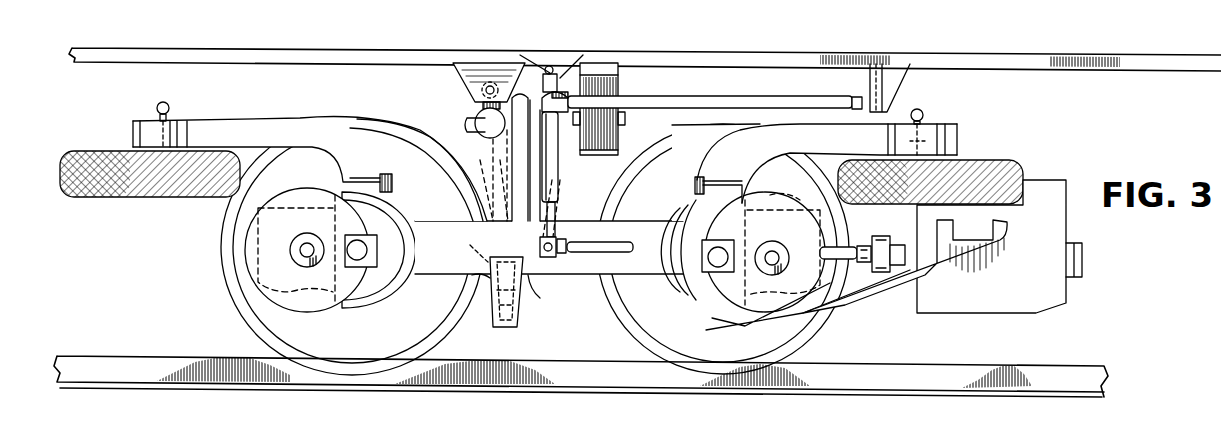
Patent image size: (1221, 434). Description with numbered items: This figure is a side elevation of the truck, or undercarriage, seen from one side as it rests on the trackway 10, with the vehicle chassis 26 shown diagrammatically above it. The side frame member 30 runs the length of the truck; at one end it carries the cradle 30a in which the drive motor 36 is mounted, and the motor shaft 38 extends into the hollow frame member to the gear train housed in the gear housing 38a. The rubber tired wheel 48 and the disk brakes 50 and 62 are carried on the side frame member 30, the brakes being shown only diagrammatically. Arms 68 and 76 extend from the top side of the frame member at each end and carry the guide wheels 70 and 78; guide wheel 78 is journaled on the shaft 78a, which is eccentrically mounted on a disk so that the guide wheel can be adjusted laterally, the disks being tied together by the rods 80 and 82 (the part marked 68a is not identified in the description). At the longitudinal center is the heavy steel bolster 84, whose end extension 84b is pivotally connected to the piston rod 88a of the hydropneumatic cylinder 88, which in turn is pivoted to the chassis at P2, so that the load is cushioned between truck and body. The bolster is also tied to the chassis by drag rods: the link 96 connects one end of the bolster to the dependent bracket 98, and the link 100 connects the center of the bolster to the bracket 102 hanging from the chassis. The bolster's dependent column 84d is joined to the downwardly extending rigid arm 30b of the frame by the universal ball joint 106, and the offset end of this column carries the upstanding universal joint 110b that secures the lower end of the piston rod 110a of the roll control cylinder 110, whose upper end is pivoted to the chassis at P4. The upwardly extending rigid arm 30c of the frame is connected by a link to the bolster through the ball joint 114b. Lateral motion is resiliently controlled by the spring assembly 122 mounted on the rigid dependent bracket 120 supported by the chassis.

The trackway member 10 is at (122, 371).
The vehicle chassis 26 is at (338, 60).
The side frame member 30 is at (622, 228).
The cradle 30a is at (927, 265).
The downwardly extending rigid arm 30b is at (517, 330).
The upwardly extending rigid arm 30c is at (503, 186).
The drive motor 36 is at (999, 284).
The motor shaft 38 is at (905, 236).
The gear housing 38a is at (790, 194).
The rubber tired wheel 48 is at (646, 182).
The disk brake 50 is at (750, 228).
The disk brake 62 is at (250, 245).
The arm 68 is at (950, 146).
The spring seat portion 68a is at (925, 141).
The guide wheel 70 is at (995, 166).
The arm 76 is at (250, 133).
The guide wheel 78 is at (100, 182).
The shaft 78a is at (134, 136).
The rod 80 is at (923, 111).
The rod 82 is at (168, 104).
The bolster 84 is at (563, 118).
The bolster extension 84b is at (556, 250).
The dependent column 84d is at (540, 298).
The cylinder 88 is at (565, 90).
The piston rod 88a is at (557, 202).
The link 96 is at (610, 253).
The dependent bracket 98 is at (870, 258).
The link 100 is at (810, 99).
The bracket 102 is at (898, 87).
The universal ball joint connection 106 is at (490, 337).
The cylinder 110 is at (476, 120).
The piston rod 110a is at (470, 245).
The universal joint connection 110b is at (472, 278).
The ball joint 114b is at (533, 63).
The rigid dependent bracket 120 is at (618, 78).
The resilient spring assembly 122 is at (625, 135).
The pivot point P2 is at (551, 66).
The pivot point P4 is at (485, 89).